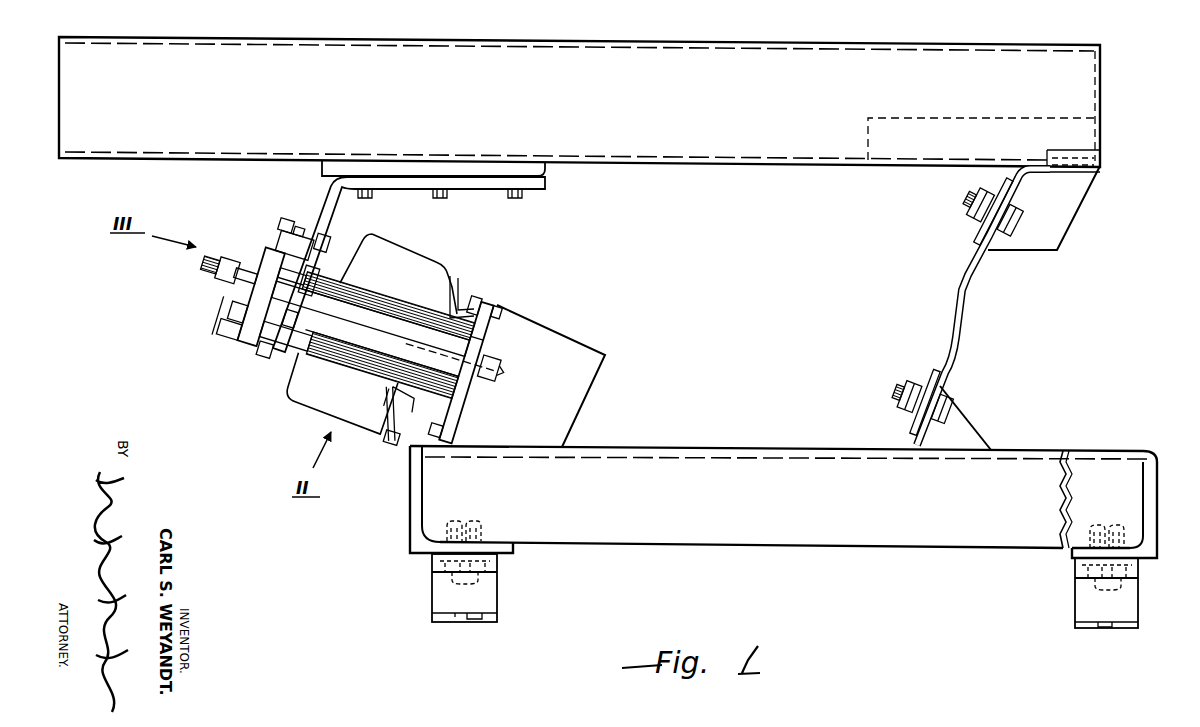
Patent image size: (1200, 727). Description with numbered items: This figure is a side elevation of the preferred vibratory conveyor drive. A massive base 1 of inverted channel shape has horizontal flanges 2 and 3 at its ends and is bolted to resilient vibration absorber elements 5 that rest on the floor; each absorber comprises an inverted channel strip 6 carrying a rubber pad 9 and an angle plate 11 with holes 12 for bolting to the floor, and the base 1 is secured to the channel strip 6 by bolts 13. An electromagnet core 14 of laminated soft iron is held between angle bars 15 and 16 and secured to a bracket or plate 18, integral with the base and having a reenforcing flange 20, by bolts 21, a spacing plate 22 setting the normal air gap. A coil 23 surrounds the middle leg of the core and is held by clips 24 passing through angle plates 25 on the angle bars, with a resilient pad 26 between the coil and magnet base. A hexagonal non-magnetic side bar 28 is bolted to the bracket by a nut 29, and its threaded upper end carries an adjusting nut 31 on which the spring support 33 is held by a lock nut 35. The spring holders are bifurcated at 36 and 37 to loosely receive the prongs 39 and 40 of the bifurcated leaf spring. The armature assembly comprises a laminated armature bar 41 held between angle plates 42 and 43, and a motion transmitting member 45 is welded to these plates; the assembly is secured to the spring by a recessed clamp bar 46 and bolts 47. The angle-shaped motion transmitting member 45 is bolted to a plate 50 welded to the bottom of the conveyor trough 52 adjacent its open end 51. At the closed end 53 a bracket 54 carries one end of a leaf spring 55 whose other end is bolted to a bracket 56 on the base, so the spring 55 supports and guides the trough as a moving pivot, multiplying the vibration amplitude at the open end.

The base 1 is at (740, 540).
The horizontal flange 2 is at (412, 552).
The horizontal flange 3 is at (1072, 556).
The resilient vibration absorber element 5 is at (490, 594).
The inverted channel strip 6 is at (497, 571).
The rubber pad 9 is at (432, 572).
The angle plate 11 is at (432, 616).
The hole 12 is at (491, 624).
The bolt 13 is at (482, 530).
The magnet core 14 is at (347, 356).
The angle bar 15 is at (448, 415).
The angle bar 16 is at (490, 305).
The bracket or plate 18 is at (491, 330).
The reenforcing flange 20 is at (586, 376).
The bolt 21 is at (480, 300).
The spacing plate 22 is at (485, 326).
The coil 23 is at (404, 259).
The clip 24 is at (380, 438).
The angle plate 25 is at (465, 273).
The resilient pad 26 is at (388, 412).
The hexagonal side bar 28 is at (378, 348).
The nut 29 is at (489, 362).
The adjusting nut 31 is at (289, 318).
The spring support 33 is at (260, 291).
The lock nut 35 is at (245, 262).
The bifurcation 36 is at (296, 245).
The bifurcation 37 is at (246, 314).
The prong 39 is at (278, 238).
The prong 40 is at (246, 333).
The armature bar 41 is at (320, 275).
The angle plate 42 is at (265, 352).
The angle plate 43 is at (323, 247).
The motion transmitting member 45 is at (333, 206).
The clamp bar 46 is at (290, 232).
The bolt 47 is at (238, 328).
The plate 50 is at (498, 172).
The open end 51 is at (62, 93).
The conveyor trough 52 is at (402, 46).
The closed end 53 is at (1101, 93).
The bracket 54 is at (1073, 203).
The leaf spring 55 is at (964, 292).
The bracket 56 is at (973, 411).